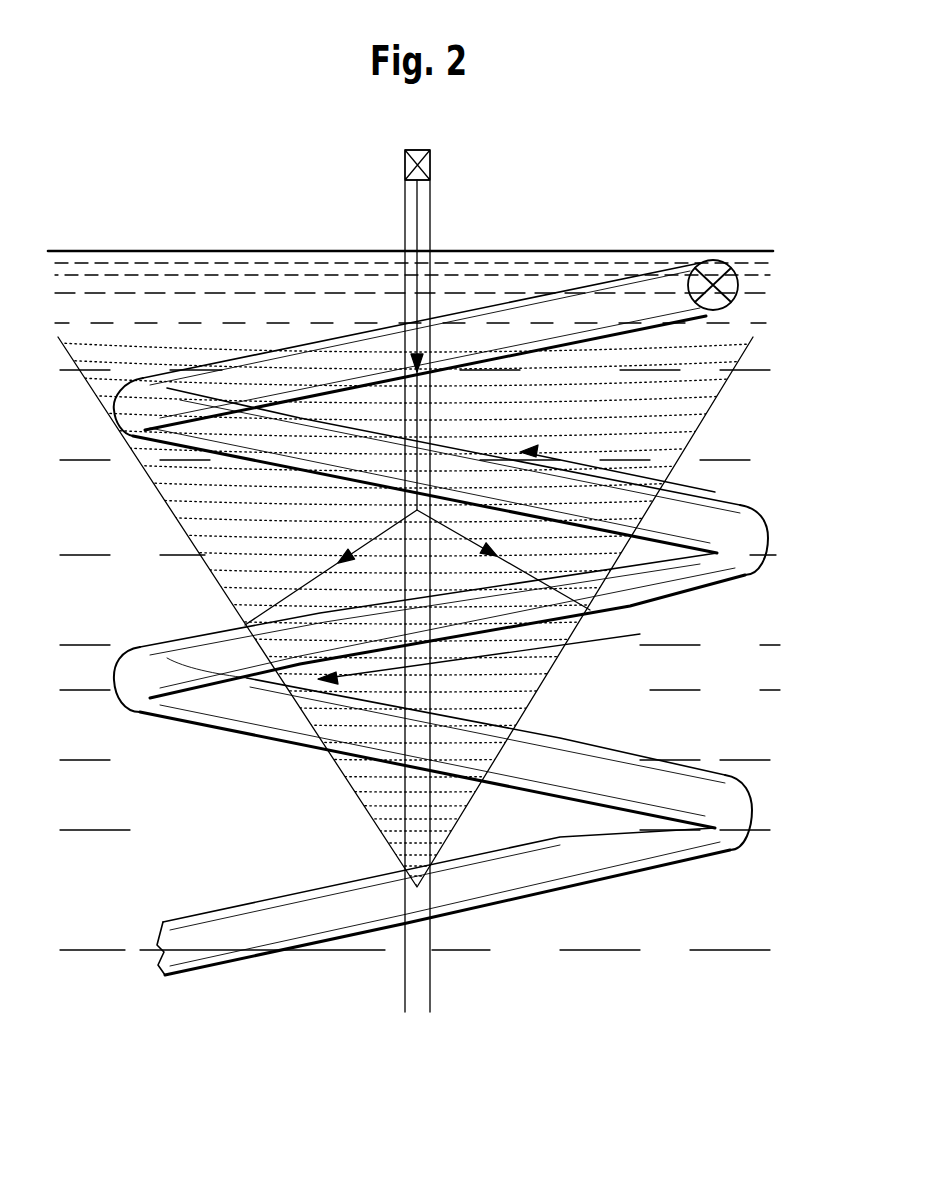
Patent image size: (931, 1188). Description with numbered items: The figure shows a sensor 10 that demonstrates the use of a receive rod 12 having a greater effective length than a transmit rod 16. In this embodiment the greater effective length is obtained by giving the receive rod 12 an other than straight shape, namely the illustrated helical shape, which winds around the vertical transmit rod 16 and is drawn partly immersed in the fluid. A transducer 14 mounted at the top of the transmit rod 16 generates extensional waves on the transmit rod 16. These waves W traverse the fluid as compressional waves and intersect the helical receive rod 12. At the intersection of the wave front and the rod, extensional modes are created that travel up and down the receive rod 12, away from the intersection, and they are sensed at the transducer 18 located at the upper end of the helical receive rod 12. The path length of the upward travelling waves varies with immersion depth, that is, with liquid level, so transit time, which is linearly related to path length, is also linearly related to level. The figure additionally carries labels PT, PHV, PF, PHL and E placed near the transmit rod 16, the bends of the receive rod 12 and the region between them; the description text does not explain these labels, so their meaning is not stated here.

The sensor 10 is at (429, 581).
The receive rod 12 is at (678, 768).
The transducer 14 is at (404, 162).
The transmit rod 16 is at (431, 284).
The transducer 18 is at (740, 286).
The pressure at top PT is at (404, 318).
The hydrostatic pressure vertical PHV is at (767, 542).
The friction pressure PF is at (650, 606).
The hydrostatic pressure lateral PHL is at (565, 653).
The inverted cone region E is at (417, 604).
The waves W is at (558, 678).